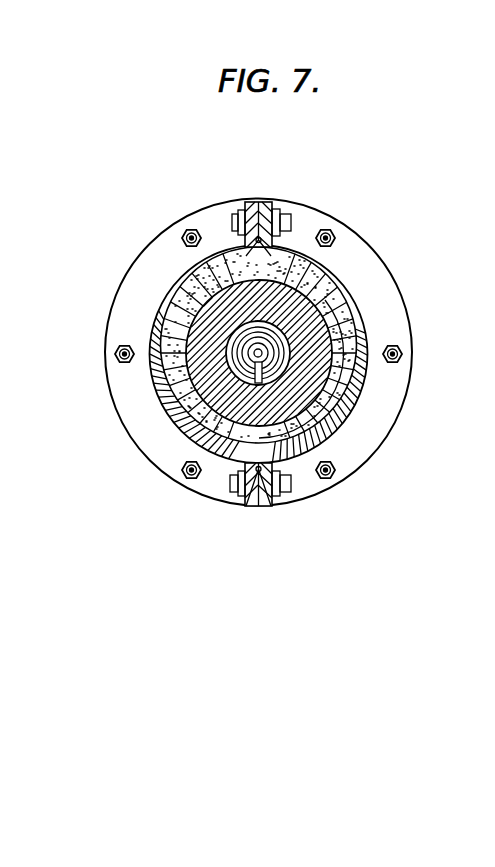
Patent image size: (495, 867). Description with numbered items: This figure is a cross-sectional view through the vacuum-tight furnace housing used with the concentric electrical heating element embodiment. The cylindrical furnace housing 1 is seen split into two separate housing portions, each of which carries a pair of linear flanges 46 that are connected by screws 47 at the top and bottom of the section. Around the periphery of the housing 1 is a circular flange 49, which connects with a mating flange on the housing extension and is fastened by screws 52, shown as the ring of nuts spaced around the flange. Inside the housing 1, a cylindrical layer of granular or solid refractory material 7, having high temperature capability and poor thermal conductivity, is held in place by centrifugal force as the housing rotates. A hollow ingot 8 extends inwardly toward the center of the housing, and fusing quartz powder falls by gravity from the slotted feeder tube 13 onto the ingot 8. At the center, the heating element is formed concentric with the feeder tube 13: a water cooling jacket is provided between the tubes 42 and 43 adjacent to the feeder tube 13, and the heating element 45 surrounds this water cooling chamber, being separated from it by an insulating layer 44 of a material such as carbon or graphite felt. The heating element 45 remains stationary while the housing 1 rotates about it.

The cylindrical furnace housing 1 is at (156, 391).
The cylindrical layer of refractory material 7 is at (195, 299).
The hollow ingot 8 is at (178, 417).
The feeder tube 13 is at (258, 352).
The tube 42 is at (288, 357).
The tube 43 is at (330, 372).
The insulating layer 44 is at (300, 348).
The heating element 45 is at (291, 337).
The linear flanges 46 is at (274, 204).
The screws 47 is at (240, 214).
The circular flange 49 is at (397, 419).
The screws 52 is at (188, 228).